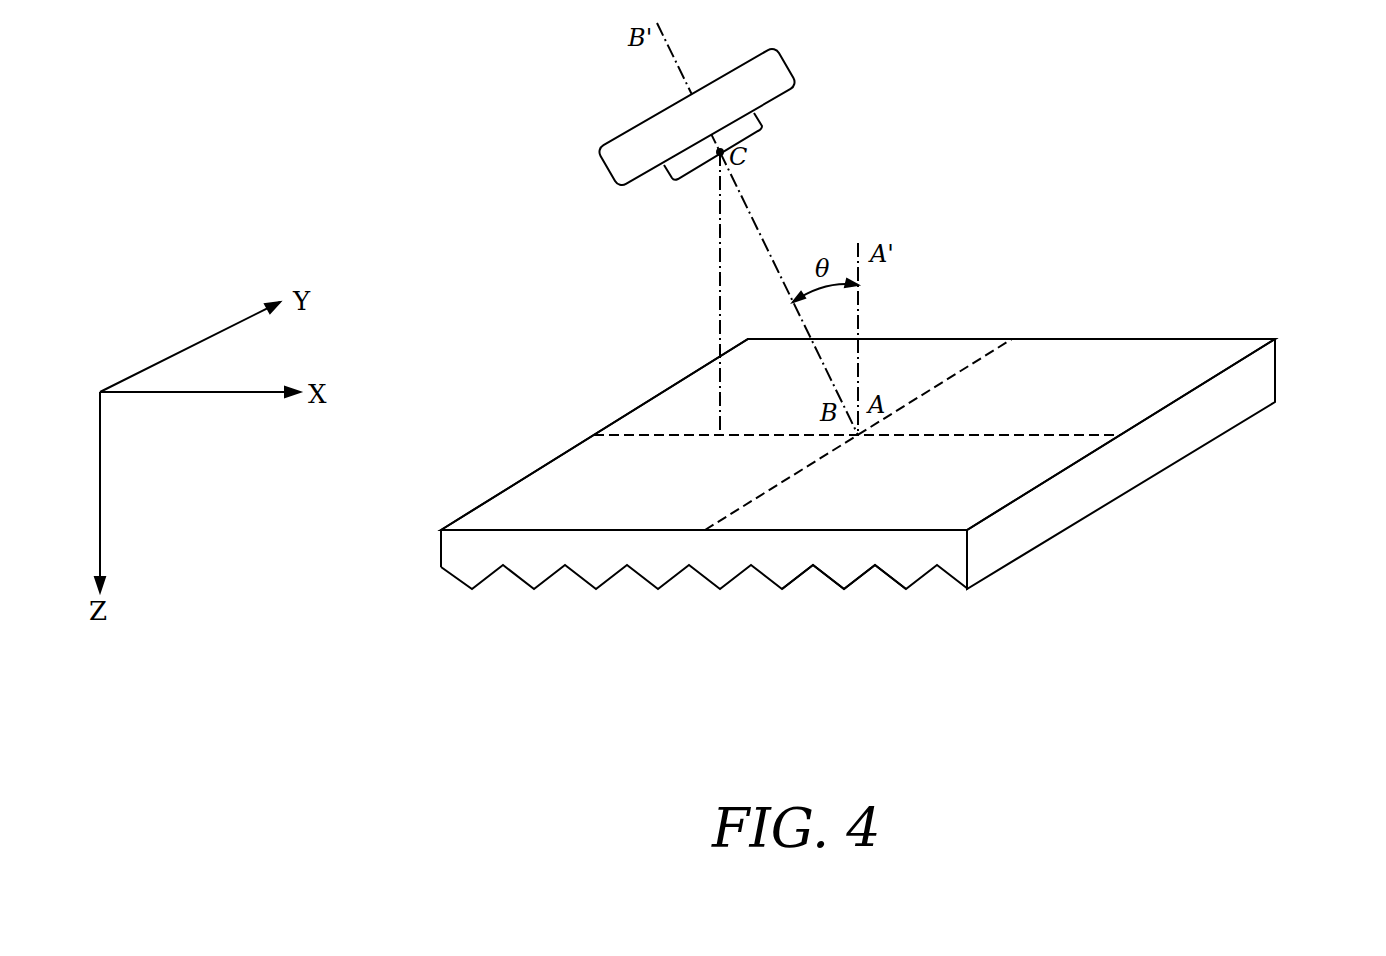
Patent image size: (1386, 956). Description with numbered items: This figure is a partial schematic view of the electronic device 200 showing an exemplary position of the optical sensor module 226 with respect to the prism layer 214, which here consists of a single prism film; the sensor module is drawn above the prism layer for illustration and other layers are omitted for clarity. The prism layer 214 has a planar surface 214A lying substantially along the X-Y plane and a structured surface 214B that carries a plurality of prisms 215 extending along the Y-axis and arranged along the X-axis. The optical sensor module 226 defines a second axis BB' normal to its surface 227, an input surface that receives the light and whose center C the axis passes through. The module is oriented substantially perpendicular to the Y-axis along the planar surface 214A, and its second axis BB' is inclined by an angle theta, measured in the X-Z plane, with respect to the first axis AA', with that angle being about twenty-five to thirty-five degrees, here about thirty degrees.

The electronic device 200 is at (1256, 181).
The prism layer 214 is at (913, 531).
The planar surface 214A is at (967, 505).
The structured surface 214B is at (922, 580).
The prisms 215 is at (902, 578).
The optical sensor module 226 is at (643, 117).
The surface 227 is at (682, 176).